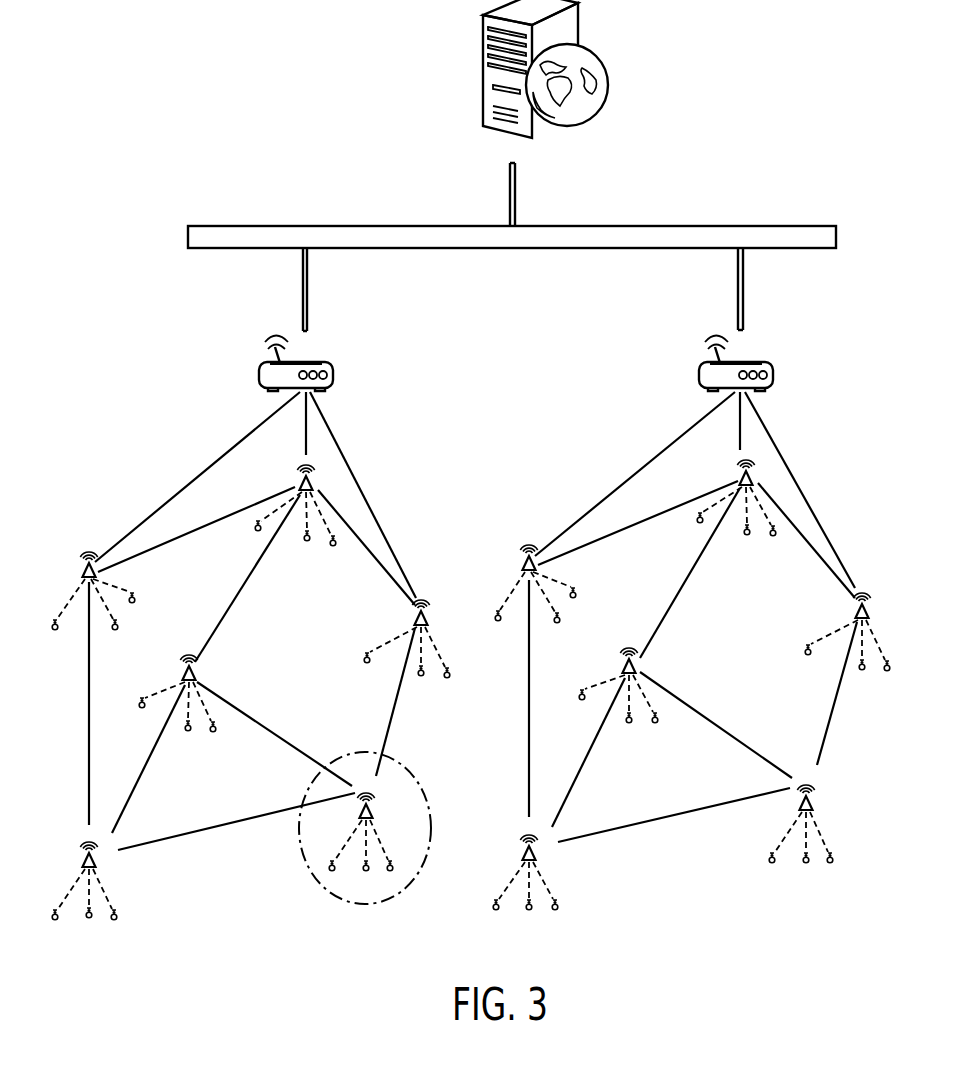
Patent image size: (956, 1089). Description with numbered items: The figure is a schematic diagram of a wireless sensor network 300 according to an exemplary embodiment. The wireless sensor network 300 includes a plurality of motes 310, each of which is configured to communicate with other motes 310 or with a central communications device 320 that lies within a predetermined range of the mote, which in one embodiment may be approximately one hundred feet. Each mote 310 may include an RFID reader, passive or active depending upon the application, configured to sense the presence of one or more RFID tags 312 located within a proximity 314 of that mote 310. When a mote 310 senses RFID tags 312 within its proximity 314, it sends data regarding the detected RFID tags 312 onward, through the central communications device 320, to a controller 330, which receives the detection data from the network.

The wireless sensor network 300 is at (133, 106).
The controller 330 is at (578, 25).
The central communications device 320 is at (335, 375).
The mote 310 is at (85, 560).
The RFID tag 312 is at (336, 542).
The proximity 314 is at (429, 793).